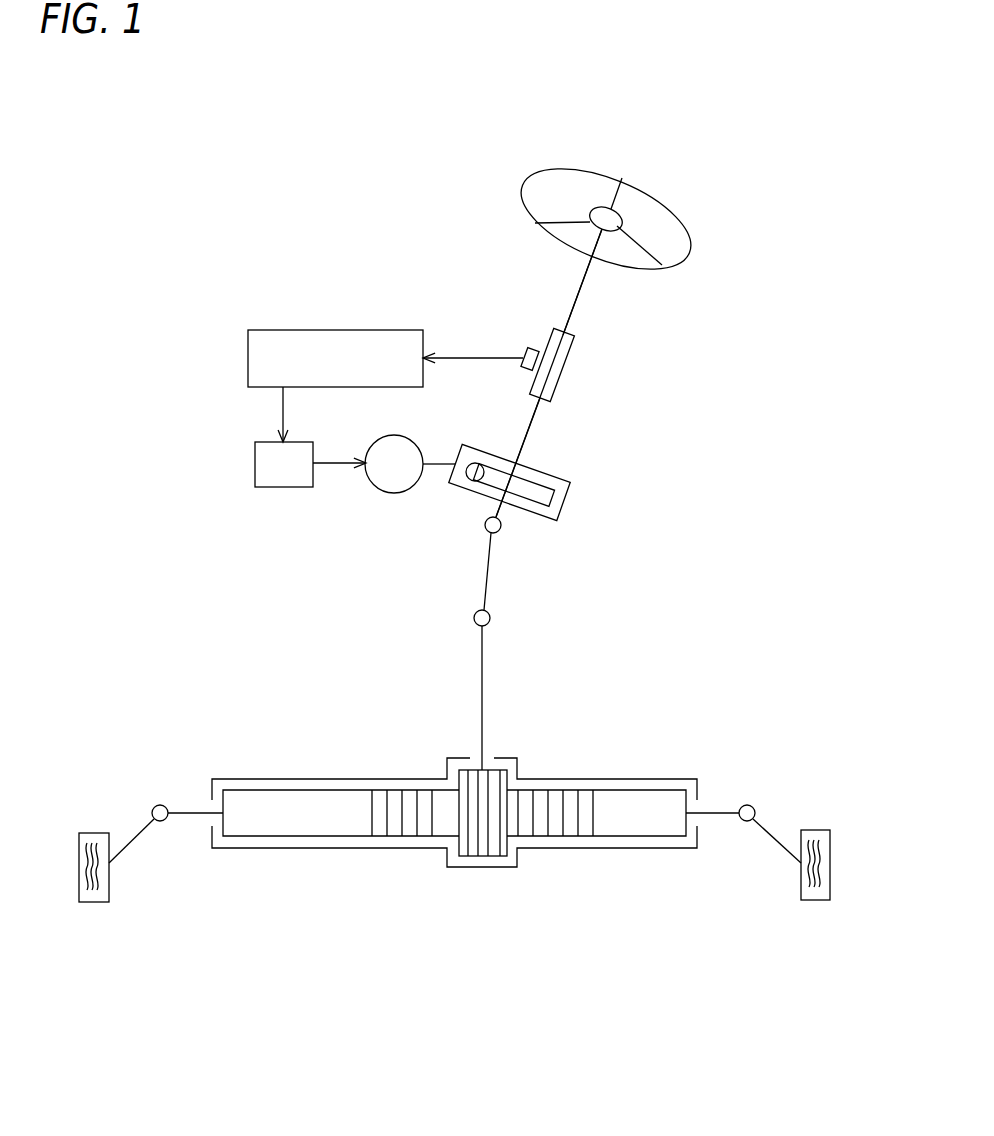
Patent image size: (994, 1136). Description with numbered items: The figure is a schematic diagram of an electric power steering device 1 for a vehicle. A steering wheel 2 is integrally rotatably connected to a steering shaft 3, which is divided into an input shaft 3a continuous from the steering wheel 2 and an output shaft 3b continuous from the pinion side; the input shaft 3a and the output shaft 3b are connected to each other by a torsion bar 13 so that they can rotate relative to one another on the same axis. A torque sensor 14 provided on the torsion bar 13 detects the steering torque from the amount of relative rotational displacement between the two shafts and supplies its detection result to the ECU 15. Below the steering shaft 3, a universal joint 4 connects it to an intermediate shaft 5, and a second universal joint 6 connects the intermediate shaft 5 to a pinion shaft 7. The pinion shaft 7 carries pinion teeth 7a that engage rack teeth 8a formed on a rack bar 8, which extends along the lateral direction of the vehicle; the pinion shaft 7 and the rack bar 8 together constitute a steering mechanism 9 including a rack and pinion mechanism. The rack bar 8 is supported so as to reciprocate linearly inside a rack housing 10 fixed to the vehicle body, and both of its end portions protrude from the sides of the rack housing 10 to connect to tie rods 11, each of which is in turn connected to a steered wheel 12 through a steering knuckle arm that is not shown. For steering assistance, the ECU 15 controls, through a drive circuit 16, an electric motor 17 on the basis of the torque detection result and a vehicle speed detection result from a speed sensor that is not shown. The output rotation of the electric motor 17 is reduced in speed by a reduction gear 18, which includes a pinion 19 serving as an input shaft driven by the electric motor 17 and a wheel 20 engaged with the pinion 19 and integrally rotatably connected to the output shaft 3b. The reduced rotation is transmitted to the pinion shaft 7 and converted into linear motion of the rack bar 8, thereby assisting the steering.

The electric power steering device 1 is at (725, 158).
The steering wheel 2 is at (596, 170).
The steering shaft 3 is at (585, 283).
The input shaft 3a is at (575, 312).
The output shaft 3b is at (531, 432).
The universal joint 4 is at (501, 525).
The intermediate shaft 5 is at (489, 572).
The universal joint 6 is at (490, 618).
The pinion shaft 7 is at (486, 722).
The pinion teeth 7a is at (493, 850).
The rack bar 8 is at (554, 840).
The rack teeth 8a is at (425, 827).
The steering mechanism 9 is at (528, 870).
The rack housing 10 is at (357, 779).
The tie rod 11 is at (142, 837).
The steered wheel 12 is at (95, 902).
The torsion bar 13 is at (562, 370).
The torque sensor 14 is at (531, 349).
The ECU 15 is at (278, 330).
The drive circuit 16 is at (255, 463).
The electric motor 17 is at (395, 493).
The reduction gear 18 is at (572, 493).
The pinion 19 is at (475, 481).
The wheel 20 is at (538, 492).